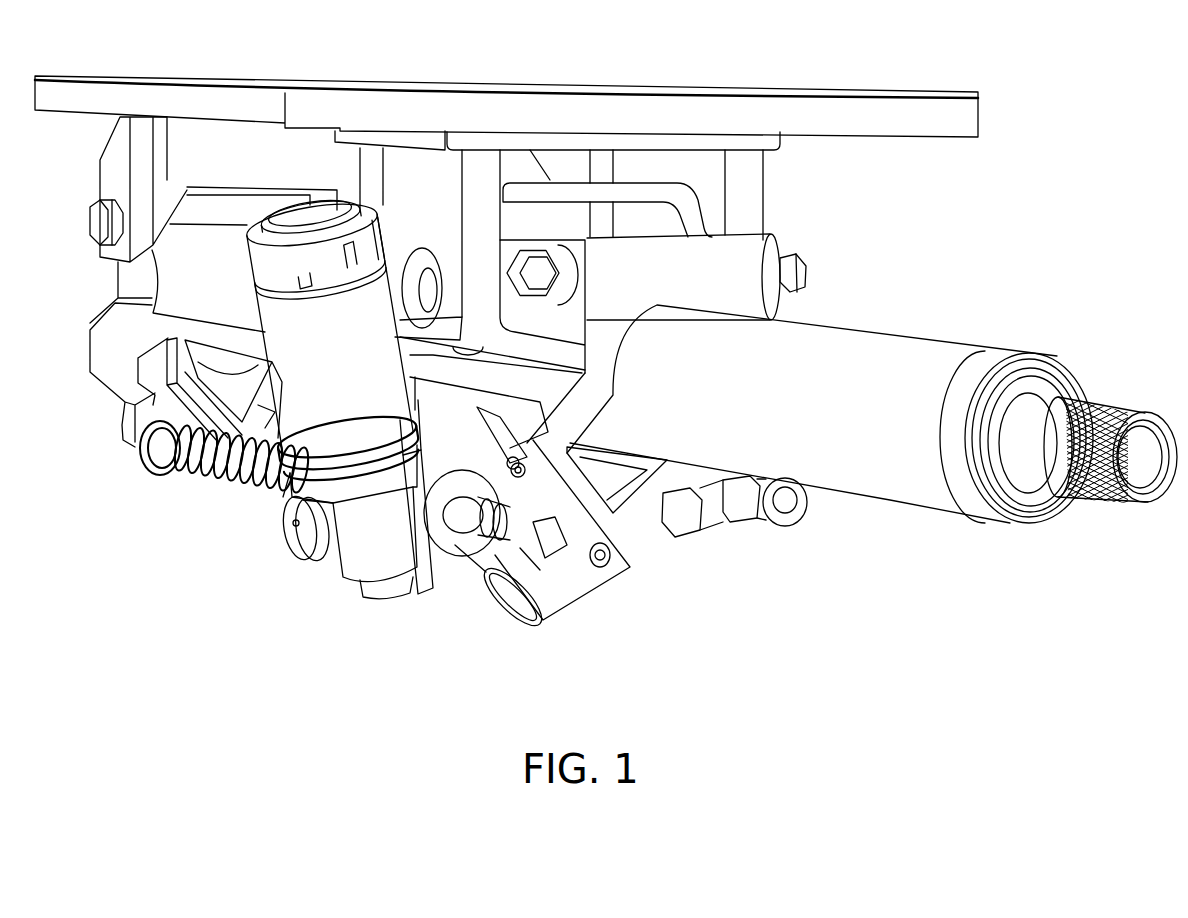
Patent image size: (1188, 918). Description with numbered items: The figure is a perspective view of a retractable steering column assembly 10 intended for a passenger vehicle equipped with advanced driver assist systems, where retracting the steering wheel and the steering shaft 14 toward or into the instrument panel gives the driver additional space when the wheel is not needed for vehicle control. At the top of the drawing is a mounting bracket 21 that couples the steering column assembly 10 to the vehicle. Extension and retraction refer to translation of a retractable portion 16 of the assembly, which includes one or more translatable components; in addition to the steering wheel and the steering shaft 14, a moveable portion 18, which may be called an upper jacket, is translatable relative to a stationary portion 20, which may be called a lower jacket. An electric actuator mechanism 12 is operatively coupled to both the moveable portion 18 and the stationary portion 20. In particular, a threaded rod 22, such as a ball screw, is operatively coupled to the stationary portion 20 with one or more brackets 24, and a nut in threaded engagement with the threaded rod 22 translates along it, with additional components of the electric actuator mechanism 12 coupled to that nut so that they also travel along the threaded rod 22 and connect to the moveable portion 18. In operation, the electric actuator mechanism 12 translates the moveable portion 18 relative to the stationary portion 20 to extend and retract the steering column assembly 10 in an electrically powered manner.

The steering column assembly 10 is at (1010, 181).
The electric actuator mechanism 12 is at (315, 592).
The steering shaft 14 is at (1100, 500).
The retractable portion 16 is at (1068, 336).
The moveable portion 18 is at (887, 477).
The stationary portion 20 is at (752, 253).
The mounting bracket 21 is at (530, 113).
The threaded rod 22 is at (223, 477).
The brackets 24 is at (585, 540).